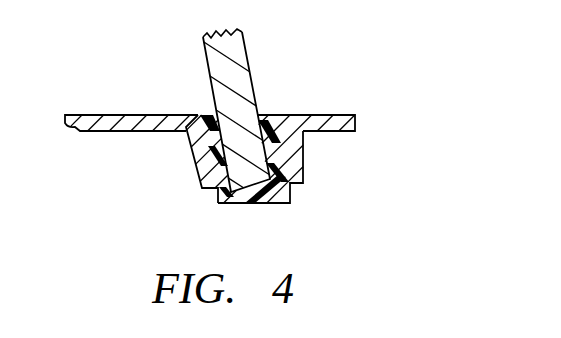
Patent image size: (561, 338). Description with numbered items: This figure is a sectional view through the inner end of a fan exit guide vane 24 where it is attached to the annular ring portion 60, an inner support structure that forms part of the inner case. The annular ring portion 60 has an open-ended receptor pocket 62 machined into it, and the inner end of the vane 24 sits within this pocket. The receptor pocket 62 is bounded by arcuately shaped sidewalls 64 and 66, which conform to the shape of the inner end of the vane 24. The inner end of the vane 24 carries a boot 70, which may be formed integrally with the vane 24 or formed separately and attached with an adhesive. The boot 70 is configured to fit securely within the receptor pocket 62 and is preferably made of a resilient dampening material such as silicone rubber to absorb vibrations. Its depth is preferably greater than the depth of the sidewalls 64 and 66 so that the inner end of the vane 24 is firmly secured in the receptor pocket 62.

The fan exit guide vane 24 is at (245, 63).
The annular ring portion 60 is at (94, 125).
The receptor pocket 62 is at (201, 106).
The sidewall 64 is at (197, 168).
The sidewall 66 is at (302, 152).
The boot 70 is at (281, 195).